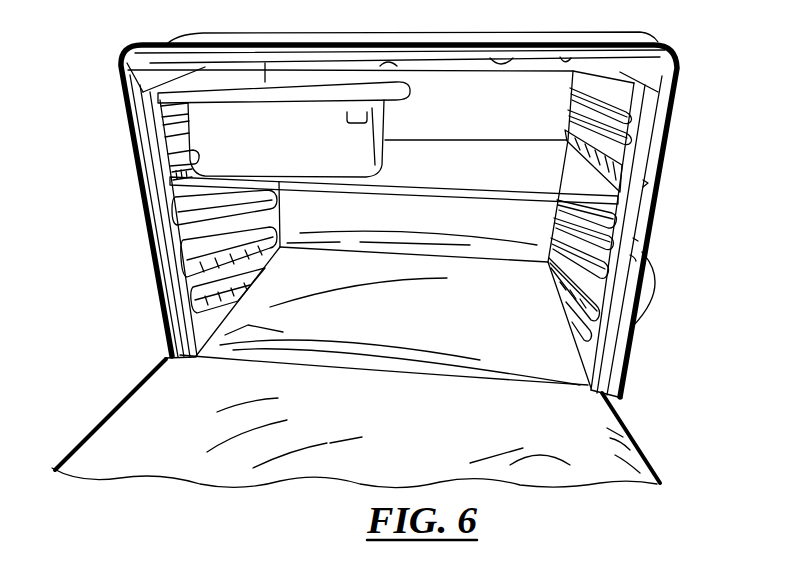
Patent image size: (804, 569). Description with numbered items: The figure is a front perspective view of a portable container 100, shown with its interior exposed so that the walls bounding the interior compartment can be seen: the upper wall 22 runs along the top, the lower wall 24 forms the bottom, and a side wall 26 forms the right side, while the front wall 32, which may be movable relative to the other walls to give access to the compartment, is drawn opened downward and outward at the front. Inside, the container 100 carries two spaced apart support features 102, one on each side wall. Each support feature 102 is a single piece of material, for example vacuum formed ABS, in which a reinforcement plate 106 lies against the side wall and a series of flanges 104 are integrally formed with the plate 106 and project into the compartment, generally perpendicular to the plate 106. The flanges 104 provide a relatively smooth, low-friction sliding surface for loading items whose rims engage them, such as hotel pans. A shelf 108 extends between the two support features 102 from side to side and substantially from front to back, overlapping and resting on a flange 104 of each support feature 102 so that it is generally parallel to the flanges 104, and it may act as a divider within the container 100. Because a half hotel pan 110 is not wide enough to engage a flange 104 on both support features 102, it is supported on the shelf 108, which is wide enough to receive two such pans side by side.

The upper wall 22 is at (571, 48).
The lower wall 24 is at (134, 168).
The side wall 26 is at (627, 293).
The front wall 32 is at (607, 475).
The portable container 100 is at (188, 497).
The support feature 102 is at (165, 335).
The flange 104 is at (220, 277).
The reinforcement plate 106 is at (195, 333).
The shelf 108 is at (279, 188).
The half hotel pan 110 is at (218, 158).